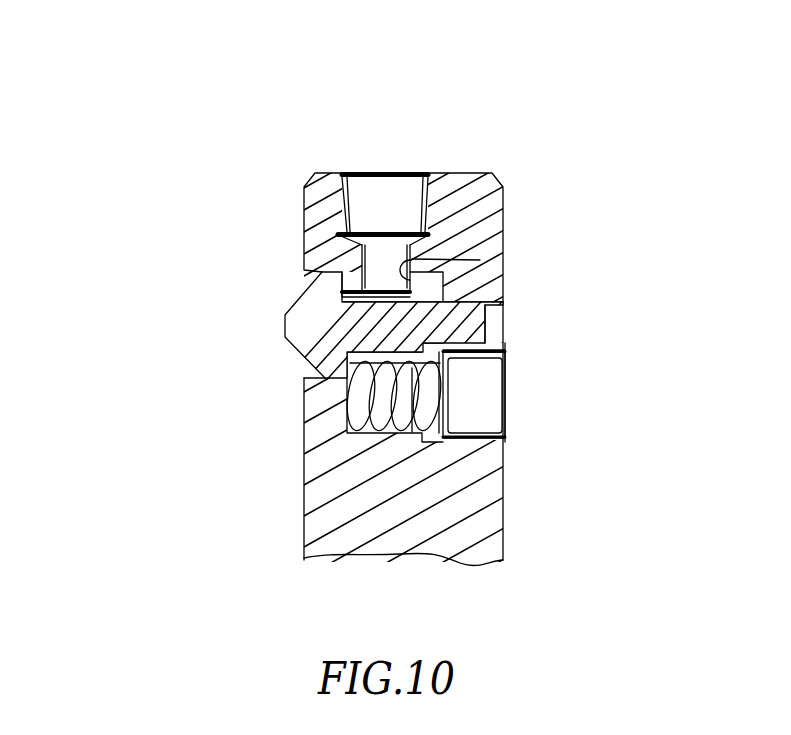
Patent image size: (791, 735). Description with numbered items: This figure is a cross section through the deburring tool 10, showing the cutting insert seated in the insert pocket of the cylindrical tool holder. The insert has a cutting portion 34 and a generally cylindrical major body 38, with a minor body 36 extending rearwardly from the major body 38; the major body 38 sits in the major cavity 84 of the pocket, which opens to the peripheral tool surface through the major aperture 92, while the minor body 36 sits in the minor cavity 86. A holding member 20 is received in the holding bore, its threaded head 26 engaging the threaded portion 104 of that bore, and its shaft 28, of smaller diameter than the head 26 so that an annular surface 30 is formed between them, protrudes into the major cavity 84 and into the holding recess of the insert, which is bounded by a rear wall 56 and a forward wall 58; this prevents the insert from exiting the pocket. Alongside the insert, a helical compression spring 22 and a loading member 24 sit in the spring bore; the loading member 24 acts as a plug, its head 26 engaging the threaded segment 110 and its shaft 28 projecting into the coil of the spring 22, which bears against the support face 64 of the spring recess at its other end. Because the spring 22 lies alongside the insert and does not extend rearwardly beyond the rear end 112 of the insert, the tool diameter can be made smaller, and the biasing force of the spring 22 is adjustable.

The deburring tool 10 is at (178, 90).
The holding member 20 is at (349, 183).
The spring 22 is at (370, 432).
The loading member 24 is at (533, 401).
The threaded head 26 is at (360, 188).
The shaft 28 is at (323, 266).
The annular surface 30 is at (414, 433).
The cutting portion 34 is at (258, 360).
The minor body 36 is at (510, 320).
The major body 38 is at (320, 313).
The rear wall 56 is at (470, 311).
The forward wall 58 is at (363, 270).
The support face 64 is at (345, 386).
The major cavity 84 is at (457, 291).
The minor cavity 86 is at (510, 333).
The major aperture 92 is at (308, 382).
The threaded portion 104 is at (411, 195).
The threaded segment 110 is at (467, 434).
The rear end 112 is at (506, 338).